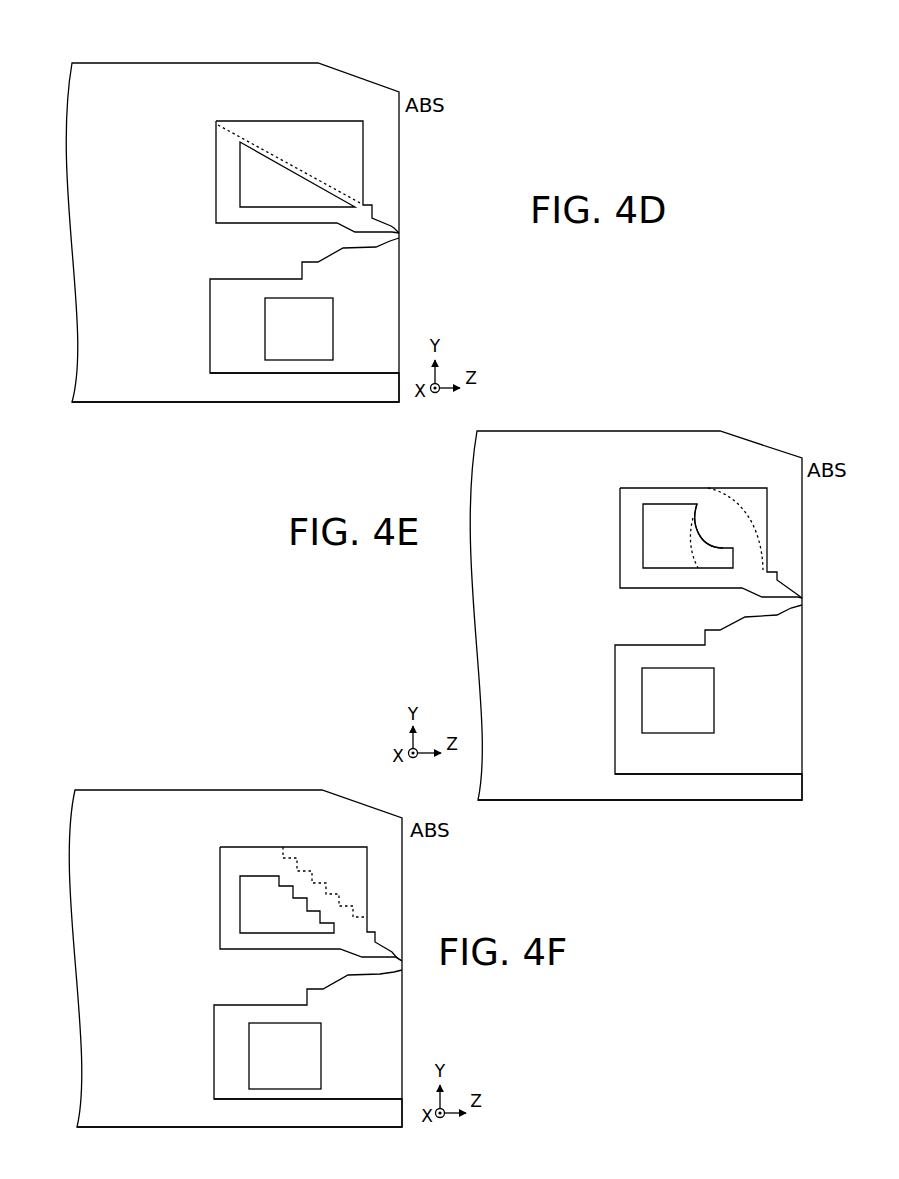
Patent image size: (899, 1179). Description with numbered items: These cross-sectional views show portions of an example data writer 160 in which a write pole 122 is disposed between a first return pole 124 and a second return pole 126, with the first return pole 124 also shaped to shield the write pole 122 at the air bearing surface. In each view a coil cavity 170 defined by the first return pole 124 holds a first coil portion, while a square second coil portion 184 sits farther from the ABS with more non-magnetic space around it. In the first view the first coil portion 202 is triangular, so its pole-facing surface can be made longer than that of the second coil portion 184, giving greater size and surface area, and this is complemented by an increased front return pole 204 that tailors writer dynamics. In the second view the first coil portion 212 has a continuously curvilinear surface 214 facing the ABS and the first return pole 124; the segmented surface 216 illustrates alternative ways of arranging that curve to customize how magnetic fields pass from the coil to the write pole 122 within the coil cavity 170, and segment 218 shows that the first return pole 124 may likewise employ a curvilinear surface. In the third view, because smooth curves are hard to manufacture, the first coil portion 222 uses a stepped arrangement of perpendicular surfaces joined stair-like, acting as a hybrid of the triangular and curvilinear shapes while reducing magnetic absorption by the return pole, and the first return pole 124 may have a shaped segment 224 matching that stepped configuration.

In FIG. 4D, the data writer 160 is at (102, 57).
In FIG. 4E, the data writer 160 is at (775, 425).
In FIG. 4F, the data writer 160 is at (106, 784).
In FIG. 4D, the first return pole 124 is at (219, 104).
In FIG. 4E, the first return pole 124 is at (622, 467).
In FIG. 4F, the first return pole 124 is at (222, 827).
In FIG. 4D, the write pole 122 is at (250, 261).
In FIG. 4E, the write pole 122 is at (654, 629).
In FIG. 4F, the write pole 122 is at (255, 987).
In FIG. 4D, the second return pole 126 is at (360, 399).
In FIG. 4E, the second return pole 126 is at (764, 797).
In FIG. 4F, the second return pole 126 is at (365, 1124).
In FIG. 4D, the coil cavity 170 is at (214, 178).
In FIG. 4E, the coil cavity 170 is at (618, 538).
In FIG. 4F, the coil cavity 170 is at (218, 892).
In FIG. 4D, the second coil portion 184 is at (280, 339).
In FIG. 4E, the second coil portion 184 is at (660, 712).
In FIG. 4F, the second coil portion 184 is at (267, 1066).
In FIG. 4D, the first coil portion 202 is at (265, 201).
In FIG. 4D, the front return pole 204 is at (335, 122).
In FIG. 4E, the first coil portion 212 is at (645, 567).
In FIG. 4E, the curvilinear surface 214 is at (702, 522).
In FIG. 4E, the segmented surface 216 is at (691, 529).
In FIG. 4E, the segment 218 is at (757, 497).
In FIG. 4F, the first coil portion 222 is at (267, 927).
In FIG. 4F, the shaped segment 224 is at (338, 849).